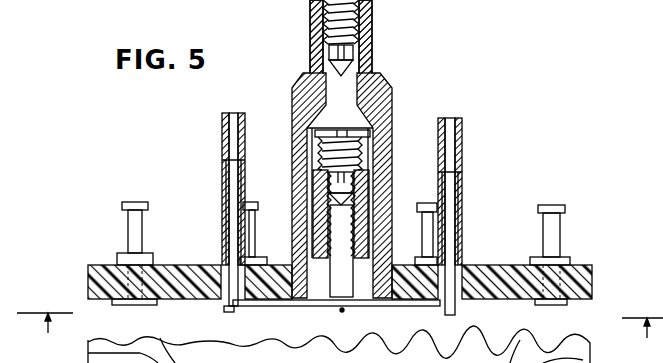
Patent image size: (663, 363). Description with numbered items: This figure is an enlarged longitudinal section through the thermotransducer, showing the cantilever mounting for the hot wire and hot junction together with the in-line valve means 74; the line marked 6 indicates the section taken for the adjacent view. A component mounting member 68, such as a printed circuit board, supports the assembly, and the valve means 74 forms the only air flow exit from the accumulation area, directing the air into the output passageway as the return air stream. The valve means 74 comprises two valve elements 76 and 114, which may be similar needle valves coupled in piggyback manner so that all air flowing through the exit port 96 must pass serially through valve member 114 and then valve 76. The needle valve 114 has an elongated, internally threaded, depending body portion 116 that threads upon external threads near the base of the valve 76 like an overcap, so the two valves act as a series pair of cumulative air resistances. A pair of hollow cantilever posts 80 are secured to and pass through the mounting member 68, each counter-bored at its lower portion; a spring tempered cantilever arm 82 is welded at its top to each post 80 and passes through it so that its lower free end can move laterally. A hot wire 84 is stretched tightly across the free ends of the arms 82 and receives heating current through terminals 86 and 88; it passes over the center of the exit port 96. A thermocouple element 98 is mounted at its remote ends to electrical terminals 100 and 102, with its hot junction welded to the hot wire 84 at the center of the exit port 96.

The component mounting member 68 is at (88, 273).
The valve means 74 is at (296, 70).
The valve element 76 is at (388, 104).
The cantilever posts 80 is at (222, 132).
The cantilever arm 82 is at (234, 158).
The hot wire 84 is at (282, 308).
The terminal 86 is at (553, 232).
The terminal 88 is at (132, 224).
The exit port 96 is at (337, 290).
The thermocouple element 98 is at (344, 311).
The electrical terminal 100 is at (251, 201).
The electrical terminal 102 is at (420, 203).
The needle valve 114 is at (360, 38).
The body portion 116 is at (362, 168).
The section line 6 is at (340, 338).